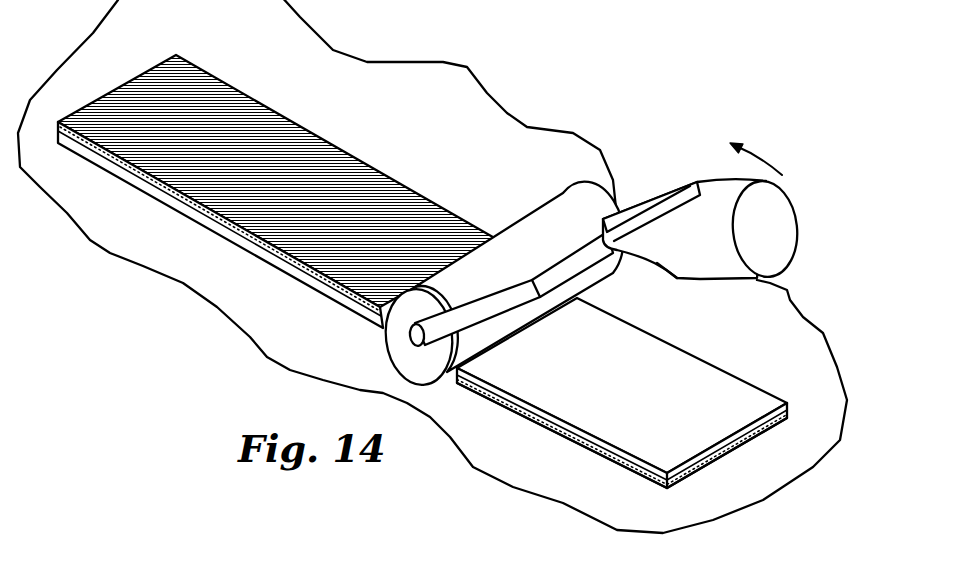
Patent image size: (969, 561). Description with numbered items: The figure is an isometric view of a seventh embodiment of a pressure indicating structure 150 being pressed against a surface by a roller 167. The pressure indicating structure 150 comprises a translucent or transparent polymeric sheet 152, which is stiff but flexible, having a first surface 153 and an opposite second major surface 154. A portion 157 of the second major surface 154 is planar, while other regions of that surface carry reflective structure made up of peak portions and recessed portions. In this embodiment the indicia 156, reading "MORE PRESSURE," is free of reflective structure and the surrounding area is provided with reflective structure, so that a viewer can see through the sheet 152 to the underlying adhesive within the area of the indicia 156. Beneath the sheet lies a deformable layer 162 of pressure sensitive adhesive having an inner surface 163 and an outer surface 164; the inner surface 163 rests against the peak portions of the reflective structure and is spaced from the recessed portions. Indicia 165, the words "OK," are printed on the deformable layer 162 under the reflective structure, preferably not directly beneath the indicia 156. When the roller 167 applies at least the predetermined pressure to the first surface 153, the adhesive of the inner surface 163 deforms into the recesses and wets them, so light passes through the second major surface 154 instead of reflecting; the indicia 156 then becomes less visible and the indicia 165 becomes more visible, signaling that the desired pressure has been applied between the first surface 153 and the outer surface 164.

The pressure indicating structure 150 is at (590, 254).
The polymeric sheet 152 is at (640, 410).
The first surface 153 is at (655, 457).
The second major surface 154 is at (278, 199).
The indicia 156 is at (313, 220).
The planar portion 157 is at (213, 227).
The deformable layer 162 is at (513, 400).
The inner surface 163 is at (555, 415).
The outer surface 164 is at (723, 454).
The indicia 165 is at (667, 423).
The roller 167 is at (547, 217).